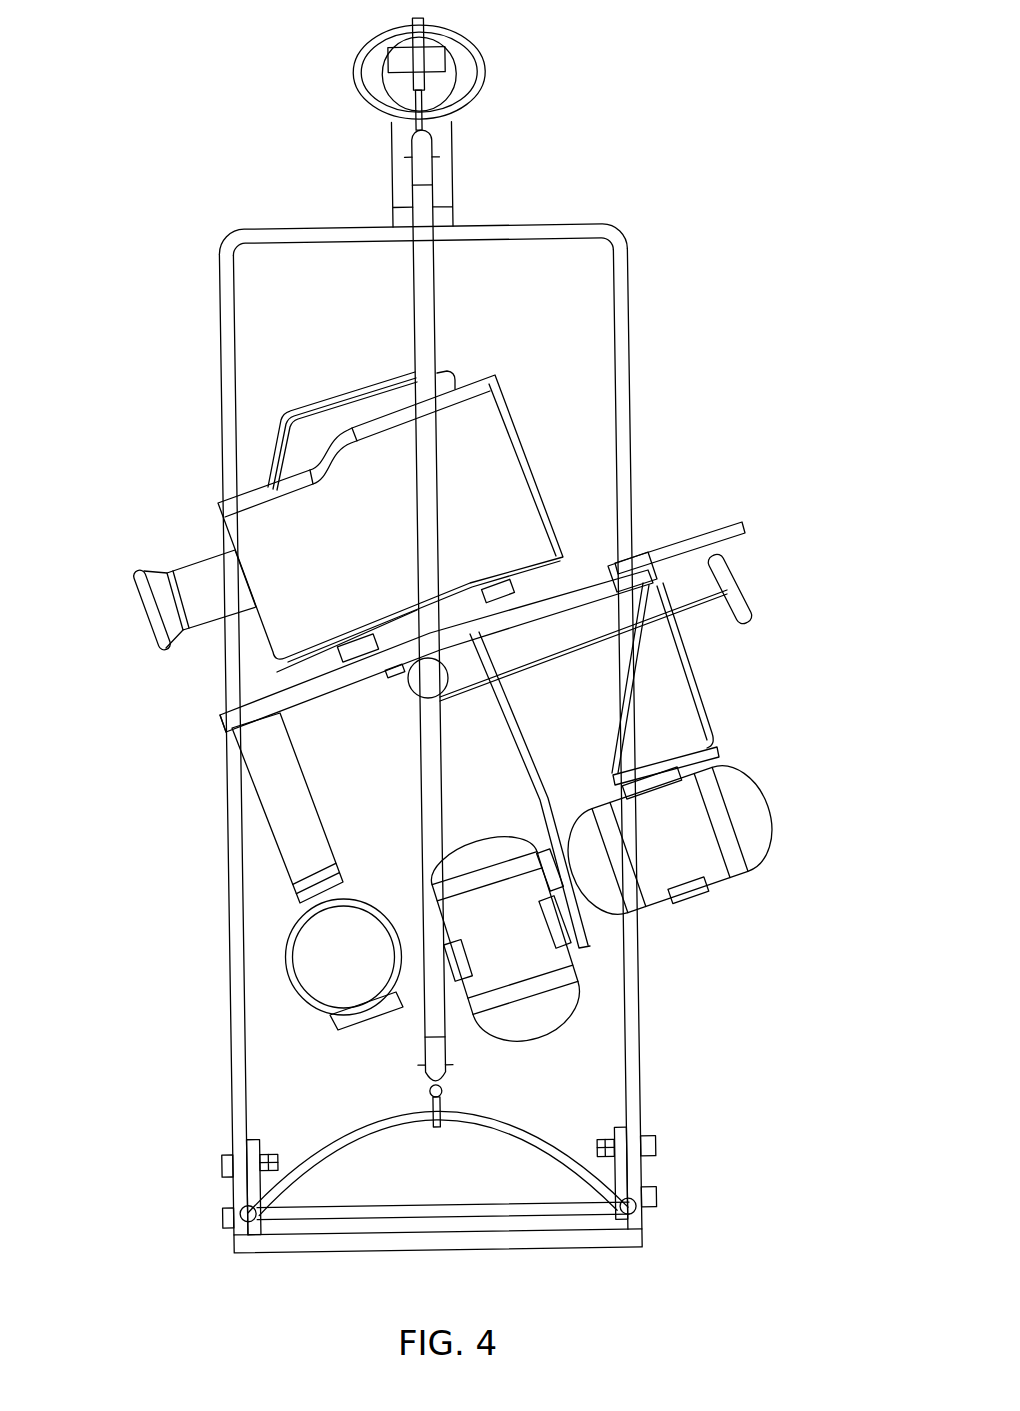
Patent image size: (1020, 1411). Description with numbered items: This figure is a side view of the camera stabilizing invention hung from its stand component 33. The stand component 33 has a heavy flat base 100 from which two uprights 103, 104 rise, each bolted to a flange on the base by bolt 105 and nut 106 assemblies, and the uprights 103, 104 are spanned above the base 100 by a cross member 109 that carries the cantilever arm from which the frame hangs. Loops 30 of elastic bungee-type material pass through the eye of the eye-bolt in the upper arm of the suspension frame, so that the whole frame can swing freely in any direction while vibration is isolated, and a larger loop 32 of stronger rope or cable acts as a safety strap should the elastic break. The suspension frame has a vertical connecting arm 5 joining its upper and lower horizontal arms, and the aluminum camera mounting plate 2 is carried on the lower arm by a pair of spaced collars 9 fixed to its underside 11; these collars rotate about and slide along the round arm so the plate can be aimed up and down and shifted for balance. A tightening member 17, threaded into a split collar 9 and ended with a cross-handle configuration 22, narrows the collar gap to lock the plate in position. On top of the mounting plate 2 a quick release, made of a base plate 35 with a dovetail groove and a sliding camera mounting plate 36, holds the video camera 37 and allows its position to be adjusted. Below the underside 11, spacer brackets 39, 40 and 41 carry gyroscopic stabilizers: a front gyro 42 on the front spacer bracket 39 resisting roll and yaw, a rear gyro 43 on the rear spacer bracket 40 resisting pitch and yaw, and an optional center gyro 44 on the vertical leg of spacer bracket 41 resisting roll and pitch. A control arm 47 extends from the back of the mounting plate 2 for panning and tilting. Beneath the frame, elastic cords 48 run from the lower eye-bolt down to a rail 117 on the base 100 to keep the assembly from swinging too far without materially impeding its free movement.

The camera mounting plate 2 is at (240, 705).
The vertical connecting arm 5 is at (434, 307).
The collars 9 is at (407, 687).
The underside of the mounting plate 11 is at (322, 700).
The tightening member 17 is at (515, 675).
The configuration to facilitate turning 22 is at (740, 580).
The loops of elastic material 30 is at (465, 60).
The safety loop 32 is at (487, 83).
The stand component 33 is at (190, 369).
The base plate of quick release 35 is at (525, 597).
The camera mounting plate of quick release 36 is at (310, 665).
The video camera 37 is at (523, 437).
The front spacer bracket 39 is at (310, 785).
The rear spacer bracket 40 is at (689, 666).
The spacer bracket 41 is at (527, 747).
The front gyro 42 is at (312, 1008).
The rear gyro 43 is at (728, 878).
The center gyro 44 is at (541, 1037).
The control arm 47 is at (723, 518).
The elastic cords 48 is at (375, 1142).
The base 100 is at (235, 1245).
The upright 103 is at (220, 408).
The upright 104 is at (628, 317).
The bolt 105 is at (223, 1152).
The nut 106 is at (265, 1152).
The cross member 109 is at (285, 230).
The rail 117 is at (537, 1205).